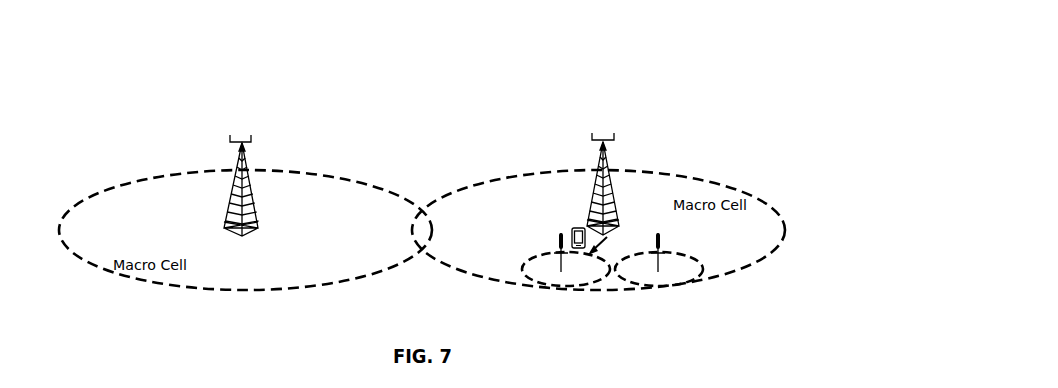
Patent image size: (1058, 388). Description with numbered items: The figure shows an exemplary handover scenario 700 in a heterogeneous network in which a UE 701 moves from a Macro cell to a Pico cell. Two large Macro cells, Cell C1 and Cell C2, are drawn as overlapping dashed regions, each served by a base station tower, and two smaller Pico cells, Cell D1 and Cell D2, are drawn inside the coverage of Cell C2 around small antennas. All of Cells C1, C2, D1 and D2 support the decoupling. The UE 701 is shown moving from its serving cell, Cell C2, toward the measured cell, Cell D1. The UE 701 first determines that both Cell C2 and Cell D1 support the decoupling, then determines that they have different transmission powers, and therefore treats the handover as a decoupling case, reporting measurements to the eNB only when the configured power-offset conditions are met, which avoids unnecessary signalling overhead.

The handover scenario 700 is at (669, 59).
The UE 701 is at (572, 227).
The Cell C1 is at (254, 181).
The Cell C2 is at (613, 191).
The Cell D1 is at (566, 259).
The Cell D2 is at (659, 259).